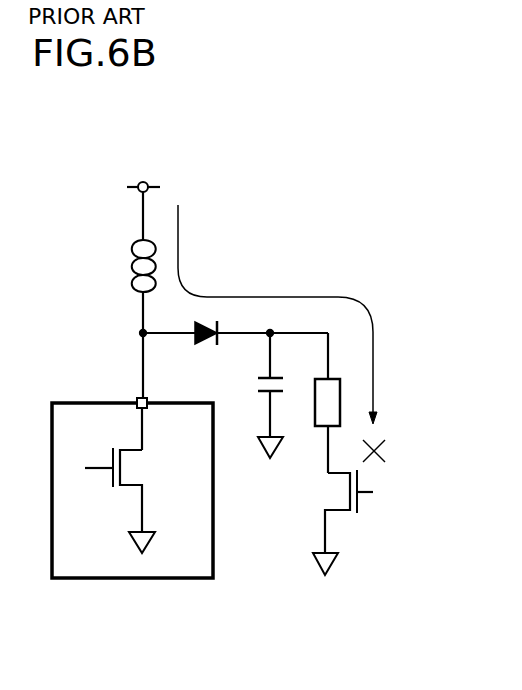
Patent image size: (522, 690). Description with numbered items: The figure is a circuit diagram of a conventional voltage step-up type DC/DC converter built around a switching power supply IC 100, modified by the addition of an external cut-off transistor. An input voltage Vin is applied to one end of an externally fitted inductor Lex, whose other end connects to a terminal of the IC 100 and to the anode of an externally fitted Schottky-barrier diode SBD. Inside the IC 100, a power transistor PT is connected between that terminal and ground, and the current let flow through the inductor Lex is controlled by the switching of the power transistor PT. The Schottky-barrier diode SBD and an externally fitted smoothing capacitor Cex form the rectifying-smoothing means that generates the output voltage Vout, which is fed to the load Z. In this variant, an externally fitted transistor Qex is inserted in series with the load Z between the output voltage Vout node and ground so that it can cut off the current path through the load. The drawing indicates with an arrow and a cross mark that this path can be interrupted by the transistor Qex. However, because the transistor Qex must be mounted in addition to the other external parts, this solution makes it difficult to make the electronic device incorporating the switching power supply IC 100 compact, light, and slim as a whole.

The voltage step-up type switching power supply IC 100 is at (95, 403).
The input voltage Vin is at (133, 200).
The externally fitted inductor Lex is at (137, 268).
The externally fitted Schottky-barrier diode SBD is at (207, 348).
The output voltage Vout is at (305, 324).
The externally fitted smoothing capacitor Cex is at (256, 393).
The load Z is at (327, 379).
The externally fitted transistor Qex is at (359, 501).
The power transistor PT is at (113, 452).